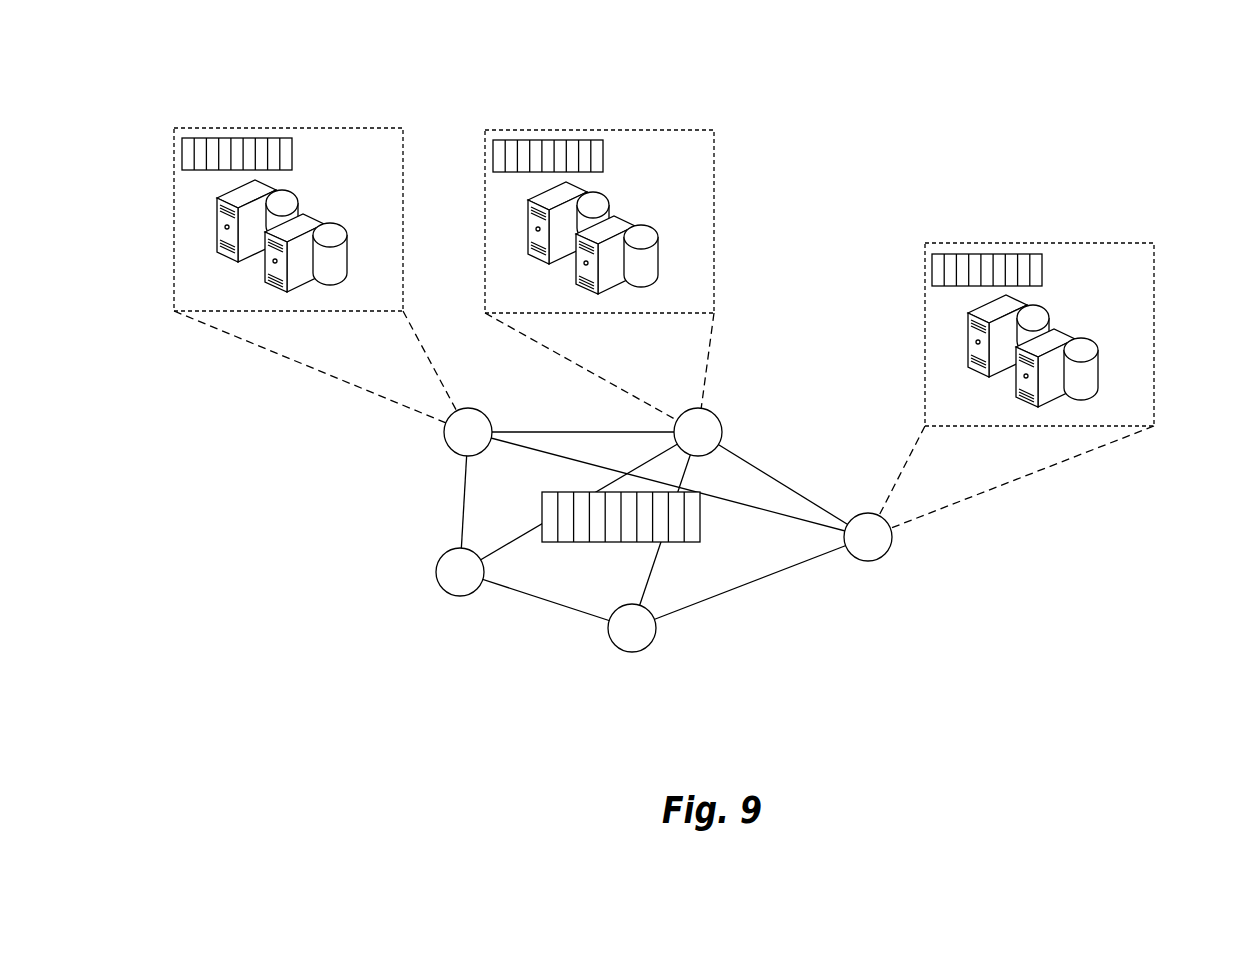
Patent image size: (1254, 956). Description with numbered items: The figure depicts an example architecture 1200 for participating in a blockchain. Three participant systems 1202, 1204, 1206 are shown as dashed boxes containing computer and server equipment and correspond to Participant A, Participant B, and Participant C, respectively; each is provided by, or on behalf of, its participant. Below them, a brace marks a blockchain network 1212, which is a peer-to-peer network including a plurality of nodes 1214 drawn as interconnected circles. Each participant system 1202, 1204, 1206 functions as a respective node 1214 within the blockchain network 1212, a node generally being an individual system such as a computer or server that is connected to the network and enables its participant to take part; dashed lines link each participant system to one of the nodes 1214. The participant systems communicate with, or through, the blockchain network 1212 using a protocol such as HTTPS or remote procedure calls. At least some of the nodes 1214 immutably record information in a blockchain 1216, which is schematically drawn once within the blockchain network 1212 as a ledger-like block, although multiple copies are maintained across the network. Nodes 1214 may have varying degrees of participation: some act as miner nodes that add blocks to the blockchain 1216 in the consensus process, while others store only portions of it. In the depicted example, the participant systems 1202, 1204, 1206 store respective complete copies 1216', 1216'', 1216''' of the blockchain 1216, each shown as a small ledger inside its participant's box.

The example architecture 1200 is at (1104, 99).
The participant system 1202 is at (312, 191).
The participant system 1204 is at (627, 193).
The participant system 1206 is at (1064, 310).
The blockchain network 1212 is at (664, 499).
The node 1214 is at (487, 414).
The blockchain 1216 is at (621, 545).
The copy of the blockchain 1216' is at (290, 121).
The copy of the blockchain 1216'' is at (599, 122).
The copy of the blockchain 1216''' is at (1042, 240).